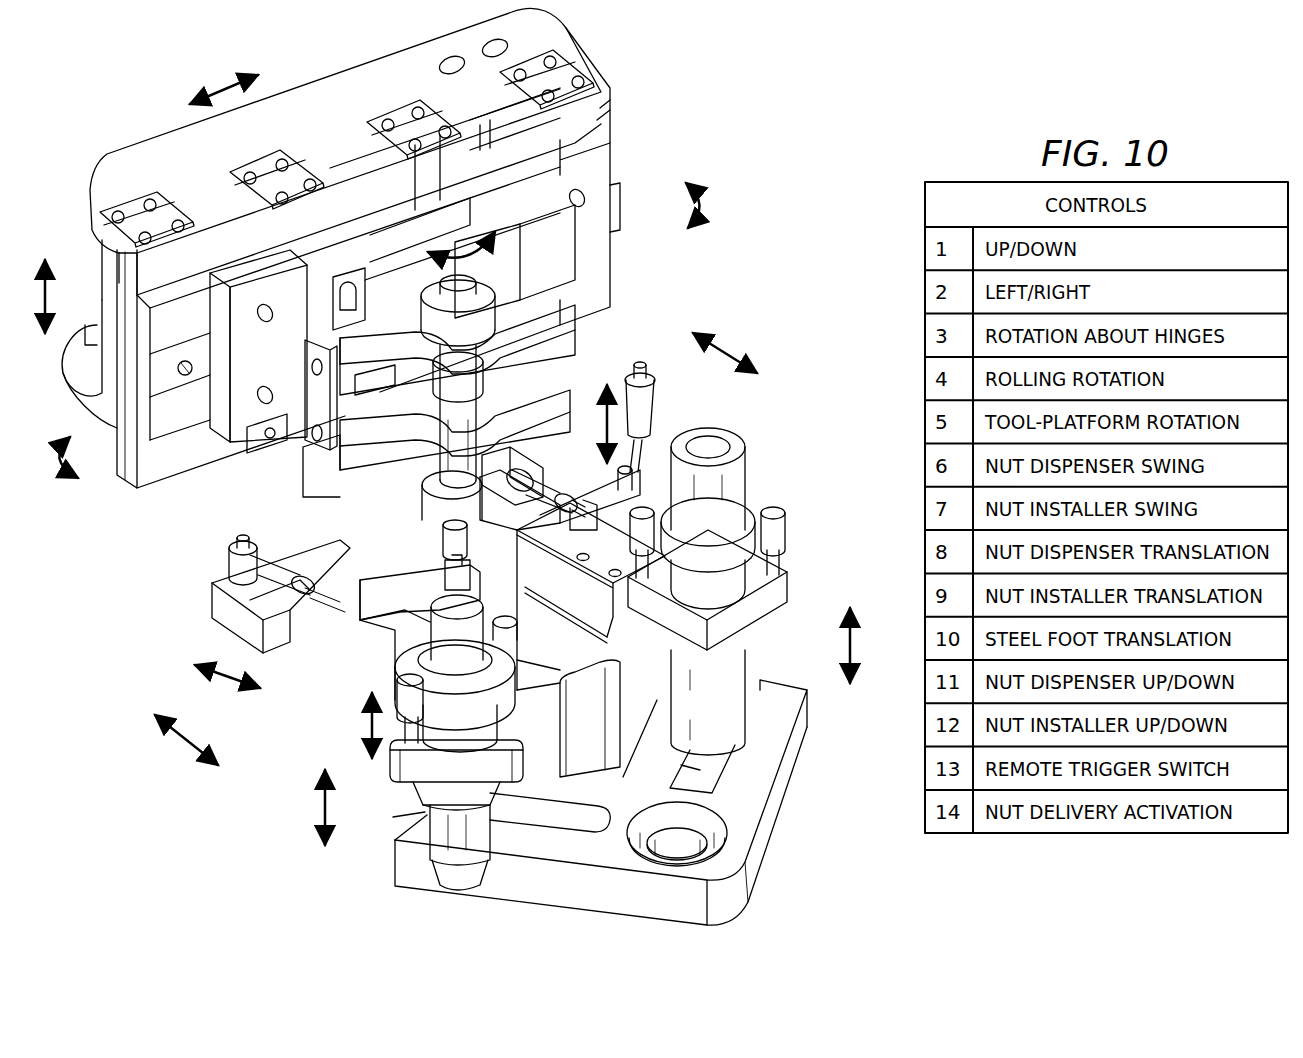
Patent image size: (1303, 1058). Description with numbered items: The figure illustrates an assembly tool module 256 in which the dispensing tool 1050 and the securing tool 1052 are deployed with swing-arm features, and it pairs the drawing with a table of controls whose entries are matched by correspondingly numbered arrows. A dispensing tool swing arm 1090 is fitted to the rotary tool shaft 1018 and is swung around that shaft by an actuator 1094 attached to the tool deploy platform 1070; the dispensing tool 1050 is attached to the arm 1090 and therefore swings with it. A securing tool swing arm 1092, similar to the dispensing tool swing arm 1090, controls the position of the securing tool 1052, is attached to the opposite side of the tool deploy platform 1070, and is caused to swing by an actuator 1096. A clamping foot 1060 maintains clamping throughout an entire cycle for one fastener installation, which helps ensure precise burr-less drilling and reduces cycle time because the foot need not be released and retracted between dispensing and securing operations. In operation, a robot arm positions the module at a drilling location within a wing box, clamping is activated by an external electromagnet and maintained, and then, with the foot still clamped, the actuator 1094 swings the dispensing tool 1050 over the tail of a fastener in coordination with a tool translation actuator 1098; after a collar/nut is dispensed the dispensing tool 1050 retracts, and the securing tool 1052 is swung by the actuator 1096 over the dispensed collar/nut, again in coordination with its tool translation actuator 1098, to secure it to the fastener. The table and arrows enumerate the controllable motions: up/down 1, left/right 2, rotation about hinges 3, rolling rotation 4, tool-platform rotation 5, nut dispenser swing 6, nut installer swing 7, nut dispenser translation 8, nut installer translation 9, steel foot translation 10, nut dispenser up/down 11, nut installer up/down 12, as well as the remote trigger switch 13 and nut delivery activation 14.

The assembly tool module 256 is at (92, 66).
The rotary tool shaft 1018 is at (440, 452).
The dispensing tool 1050 is at (745, 470).
The securing tool 1052 is at (405, 642).
The clamping foot 1060 is at (395, 863).
The tool deploy platform 1070 is at (212, 575).
The dispensing tool swing arm 1090 is at (828, 528).
The securing tool swing arm 1092 is at (318, 712).
The actuator 1094 is at (655, 415).
The actuator 1096 is at (258, 548).
The tool translation actuator 1098 is at (537, 467).
The up/down motion 1 is at (35, 296).
The left/right motion 2 is at (224, 84).
The rotation about hinges 3 is at (57, 457).
The rolling rotation 4 is at (708, 205).
The tool-platform rotation 5 is at (461, 245).
The nut dispenser swing 6 is at (598, 410).
The nut installer swing 7 is at (227, 683).
The nut dispenser translation 8 is at (725, 347).
The nut installer translation 9 is at (361, 725).
The steel foot translation 10 is at (186, 740).
The nut dispenser up/down 11 is at (868, 645).
The nut installer up/down 12 is at (309, 807).
The remote trigger switch 13 is at (445, 577).
The nut delivery activation 14 is at (717, 440).